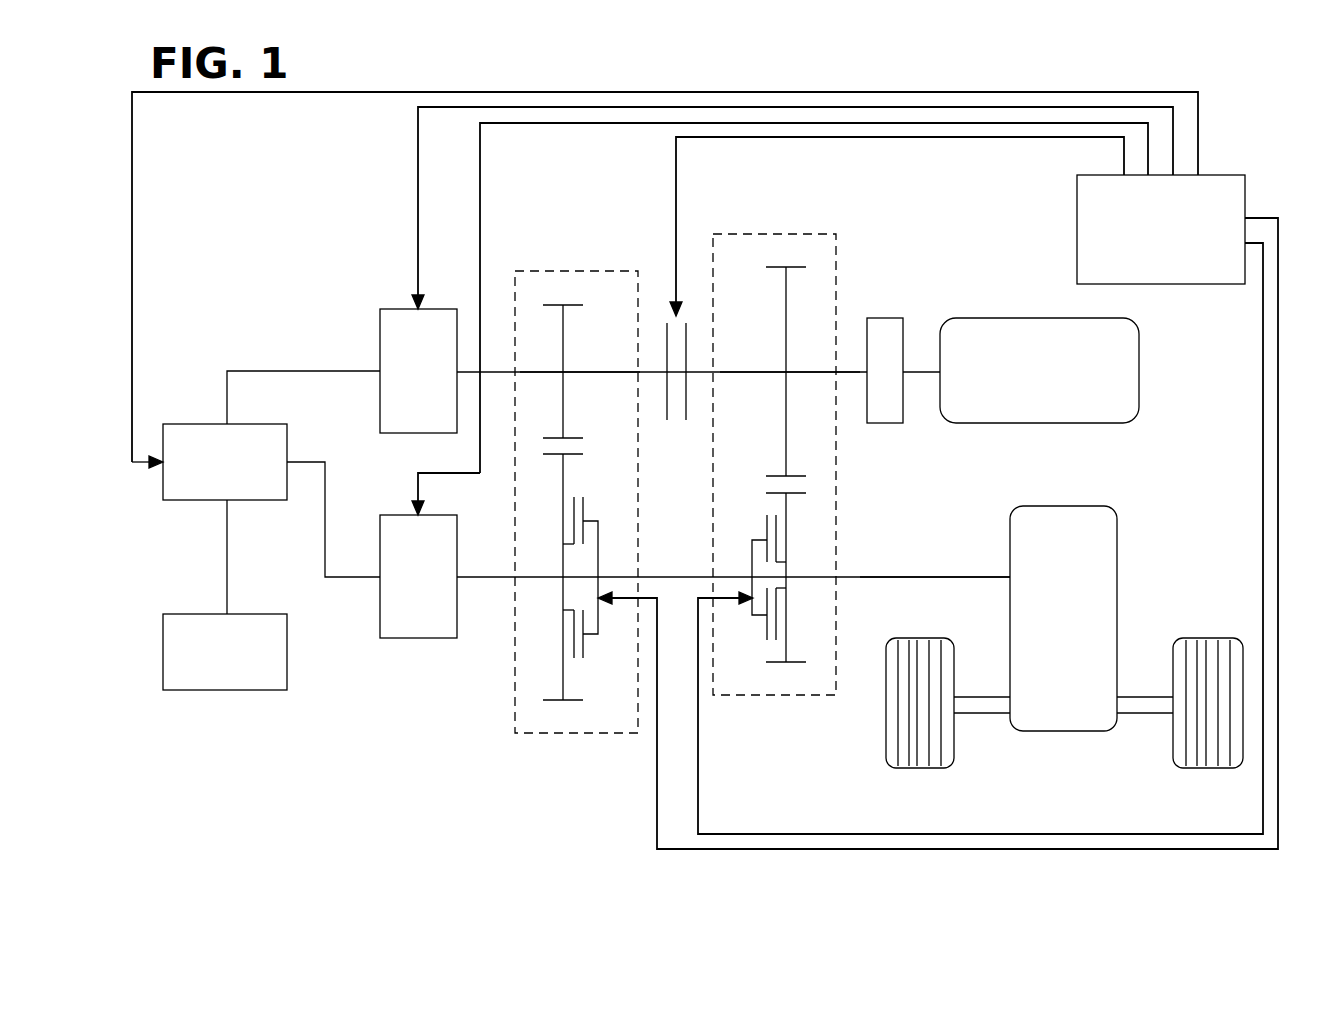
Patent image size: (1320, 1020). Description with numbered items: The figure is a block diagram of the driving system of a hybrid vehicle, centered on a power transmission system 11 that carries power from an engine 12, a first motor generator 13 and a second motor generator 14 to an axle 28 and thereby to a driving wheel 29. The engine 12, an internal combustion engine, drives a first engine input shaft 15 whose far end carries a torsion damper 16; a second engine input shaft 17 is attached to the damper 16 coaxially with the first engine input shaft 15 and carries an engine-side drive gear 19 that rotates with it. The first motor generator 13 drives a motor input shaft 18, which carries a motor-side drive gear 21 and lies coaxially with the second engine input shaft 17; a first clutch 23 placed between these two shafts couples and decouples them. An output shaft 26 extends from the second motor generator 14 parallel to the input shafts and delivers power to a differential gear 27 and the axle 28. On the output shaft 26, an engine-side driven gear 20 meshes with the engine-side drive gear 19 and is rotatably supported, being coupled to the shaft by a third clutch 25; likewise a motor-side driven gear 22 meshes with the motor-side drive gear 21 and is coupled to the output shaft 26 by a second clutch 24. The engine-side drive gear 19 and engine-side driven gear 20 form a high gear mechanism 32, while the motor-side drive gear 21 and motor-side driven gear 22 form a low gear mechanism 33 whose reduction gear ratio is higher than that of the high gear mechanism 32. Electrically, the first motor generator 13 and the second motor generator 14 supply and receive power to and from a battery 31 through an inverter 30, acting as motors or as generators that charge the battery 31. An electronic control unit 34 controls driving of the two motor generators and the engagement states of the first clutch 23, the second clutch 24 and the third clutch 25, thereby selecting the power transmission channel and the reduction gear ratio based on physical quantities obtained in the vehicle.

The power transmission system 11 is at (480, 688).
The engine 12 is at (1031, 318).
The first motor generator 13 is at (400, 309).
The second motor generator 14 is at (400, 515).
The first engine input shaft 15 is at (920, 372).
The damper 16 is at (887, 318).
The second engine input shaft 17 is at (813, 372).
The motor input shaft 18 is at (607, 372).
The engine-side drive gear 19 is at (786, 335).
The engine-side driven gear 20 is at (787, 520).
The motor-side drive gear 21 is at (562, 338).
The motor-side driven gear 22 is at (565, 478).
The first clutch 23 is at (667, 343).
The second clutch 24 is at (598, 538).
The third clutch 25 is at (752, 562).
The output shaft 26 is at (966, 577).
The differential gear 27 is at (1118, 573).
The axle 28 is at (982, 714).
The driving wheel 29 is at (918, 768).
The inverter 30 is at (215, 424).
The battery 31 is at (193, 614).
The high gear mechanism 32 is at (776, 234).
The low gear mechanism 33 is at (578, 270).
The electronic control unit 34 is at (1196, 284).